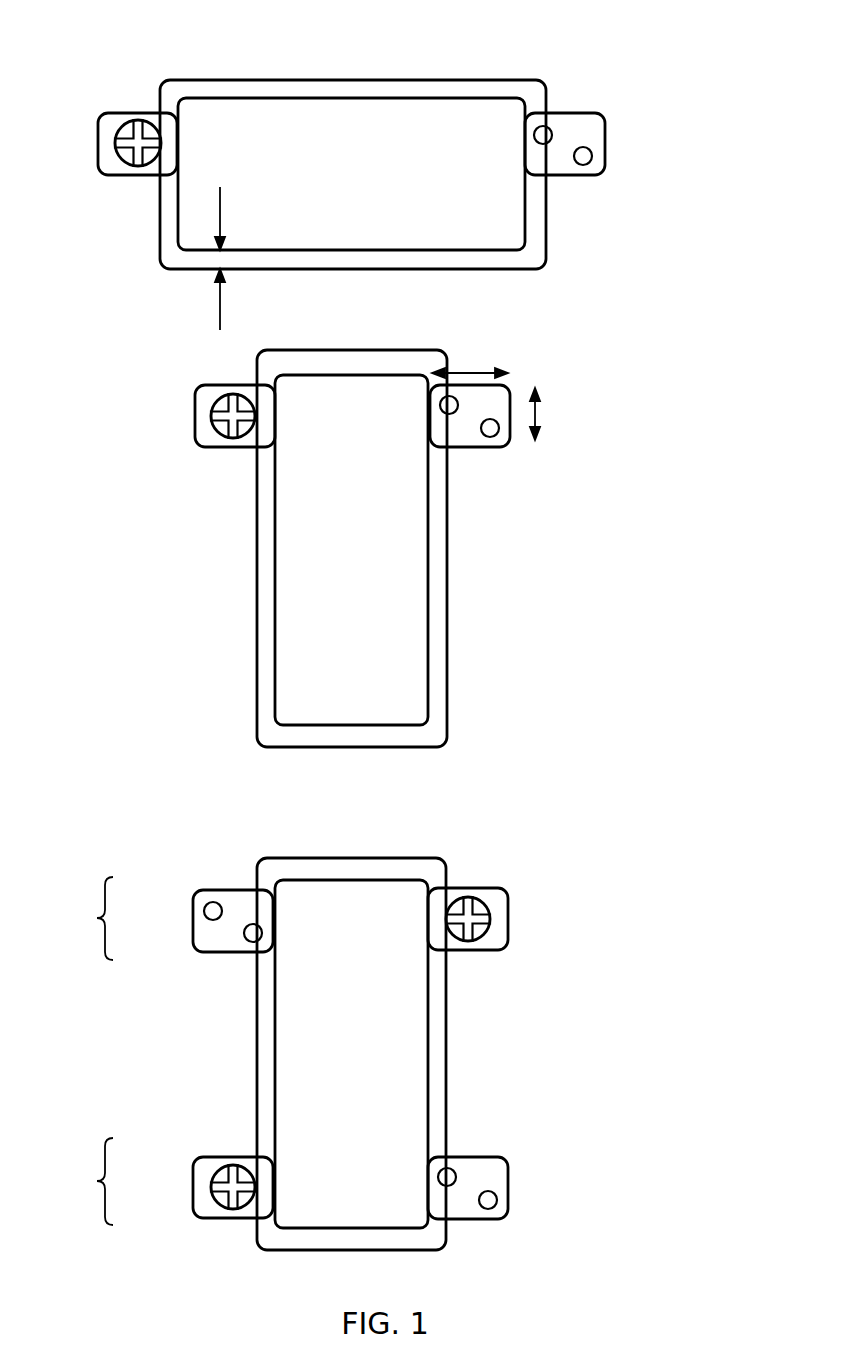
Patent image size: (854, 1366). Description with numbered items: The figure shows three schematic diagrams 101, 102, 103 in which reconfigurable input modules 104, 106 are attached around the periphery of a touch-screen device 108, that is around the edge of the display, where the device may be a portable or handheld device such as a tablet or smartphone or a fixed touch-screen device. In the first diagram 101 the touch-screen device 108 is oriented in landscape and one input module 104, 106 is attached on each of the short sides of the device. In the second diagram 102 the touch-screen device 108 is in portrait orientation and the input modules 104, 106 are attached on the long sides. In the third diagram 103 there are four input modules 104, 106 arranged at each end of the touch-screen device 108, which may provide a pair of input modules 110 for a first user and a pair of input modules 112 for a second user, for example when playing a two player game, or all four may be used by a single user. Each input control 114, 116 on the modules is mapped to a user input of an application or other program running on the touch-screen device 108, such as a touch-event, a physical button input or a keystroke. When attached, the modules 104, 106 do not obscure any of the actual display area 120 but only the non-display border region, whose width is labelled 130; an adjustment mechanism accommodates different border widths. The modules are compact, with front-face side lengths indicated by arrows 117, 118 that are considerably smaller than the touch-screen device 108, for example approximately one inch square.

The first diagram 101 is at (647, 106).
The second diagram 102 is at (652, 452).
The third diagram 103 is at (676, 960).
The input module 104 is at (108, 163).
The input module 106 is at (597, 163).
The touch-screen device 108 is at (352, 80).
The pair of input modules 110 is at (79, 918).
The pair of input modules 112 is at (79, 1181).
The input control 114 is at (128, 128).
The input control 116 is at (583, 156).
The arrow 117 is at (470, 361).
The arrow 118 is at (557, 414).
The display area 120 is at (351, 663).
The width of non-display border region 130 is at (239, 258).